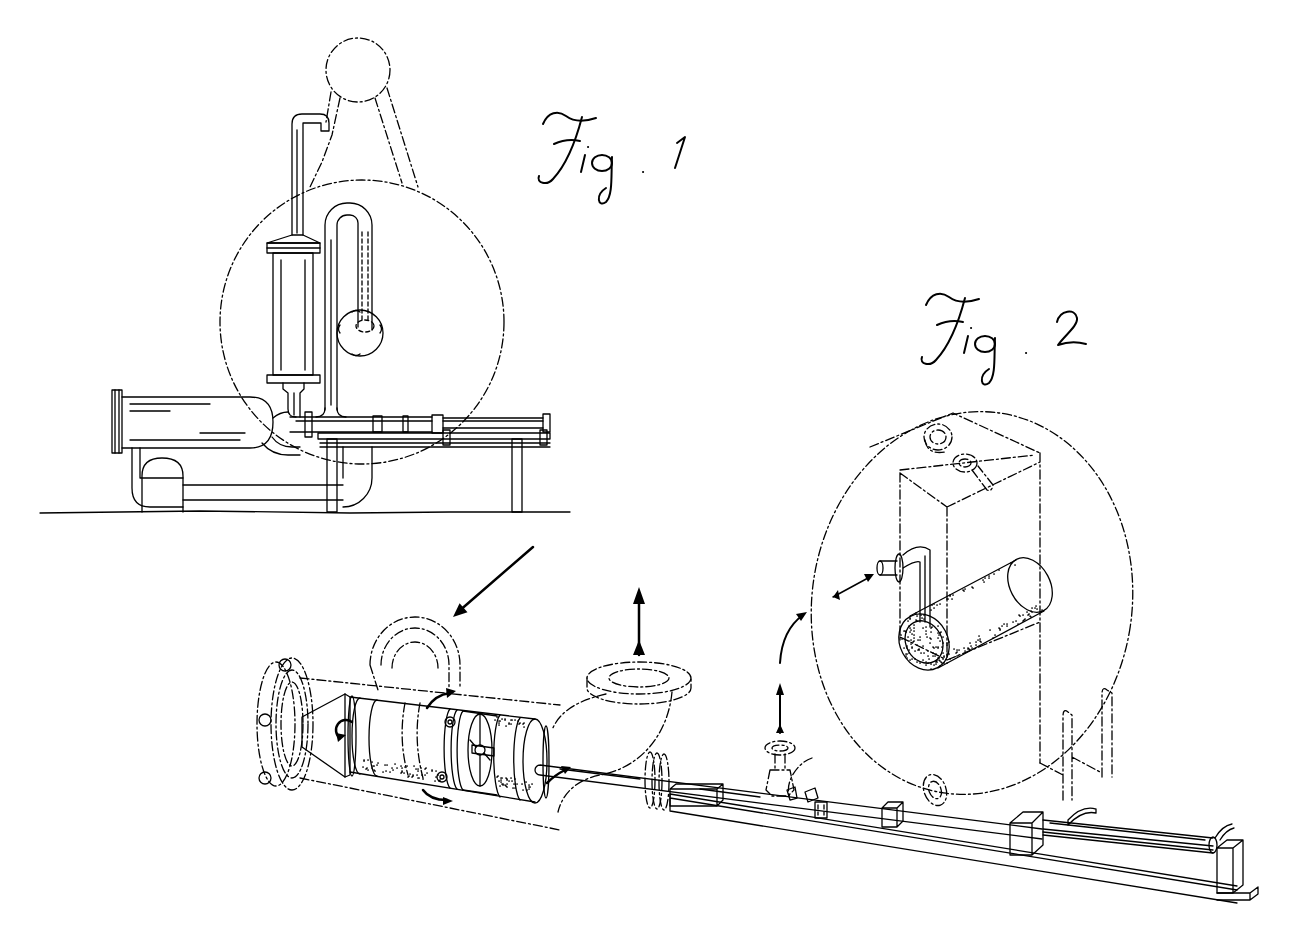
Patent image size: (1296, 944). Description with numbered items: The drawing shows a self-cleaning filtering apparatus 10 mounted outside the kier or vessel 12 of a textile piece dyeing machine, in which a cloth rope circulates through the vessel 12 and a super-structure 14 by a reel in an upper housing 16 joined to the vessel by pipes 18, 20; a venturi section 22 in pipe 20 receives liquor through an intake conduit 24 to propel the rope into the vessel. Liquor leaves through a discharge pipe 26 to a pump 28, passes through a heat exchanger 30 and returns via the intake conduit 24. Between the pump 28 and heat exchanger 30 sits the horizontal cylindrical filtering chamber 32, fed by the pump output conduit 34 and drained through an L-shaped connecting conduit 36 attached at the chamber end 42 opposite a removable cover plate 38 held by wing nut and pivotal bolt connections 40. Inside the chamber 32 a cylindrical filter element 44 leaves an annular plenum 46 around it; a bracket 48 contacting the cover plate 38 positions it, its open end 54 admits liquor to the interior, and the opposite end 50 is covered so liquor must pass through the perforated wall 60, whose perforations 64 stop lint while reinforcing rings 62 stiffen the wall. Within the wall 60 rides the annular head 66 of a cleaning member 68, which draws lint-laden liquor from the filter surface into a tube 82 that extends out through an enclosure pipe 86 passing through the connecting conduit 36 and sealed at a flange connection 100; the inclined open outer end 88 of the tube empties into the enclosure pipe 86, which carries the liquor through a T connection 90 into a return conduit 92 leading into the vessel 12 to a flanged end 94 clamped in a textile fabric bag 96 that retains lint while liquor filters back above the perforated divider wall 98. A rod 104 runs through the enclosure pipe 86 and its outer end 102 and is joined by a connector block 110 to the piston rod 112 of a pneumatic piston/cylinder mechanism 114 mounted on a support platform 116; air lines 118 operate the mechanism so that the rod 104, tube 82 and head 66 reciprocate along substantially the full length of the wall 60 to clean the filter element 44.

In FIG. 1, the self-cleaning filtering apparatus 10 is at (203, 386).
In FIG. 2, the self-cleaning filtering apparatus 10 is at (640, 825).
In FIG. 1, the vessel 12 is at (505, 263).
In FIG. 2, the vessel 12 is at (1132, 590).
In FIG. 1, the super-structure 14 is at (402, 118).
In FIG. 1, the upper housing 16 is at (390, 57).
In FIG. 1, the pipe 18 is at (408, 153).
In FIG. 2, the pipe 18 is at (985, 457).
In FIG. 1, the pipe 20 is at (327, 106).
In FIG. 2, the pipe 20 is at (950, 425).
In FIG. 1, the venturi section 22 is at (335, 140).
In FIG. 1, the intake conduit 24 is at (290, 154).
In FIG. 1, the discharge pipe 26 is at (375, 483).
In FIG. 1, the pump 28 is at (172, 512).
In FIG. 1, the heat exchanger 30 is at (272, 306).
In FIG. 1, the filtering chamber 32 is at (169, 396).
In FIG. 2, the filtering chamber 32 is at (484, 694).
In FIG. 1, the output conduit 34 is at (130, 471).
In FIG. 2, the output conduit 34 is at (470, 652).
In FIG. 1, the connecting conduit 36 is at (272, 398).
In FIG. 2, the connecting conduit 36 is at (676, 700).
In FIG. 1, the cover plate 38 is at (110, 423).
In FIG. 2, the cover plate 38 is at (310, 650).
In FIG. 2, the wing nut and pivotal bolt connections 40 is at (262, 742).
In FIG. 1, the end of the chamber 42 is at (280, 450).
In FIG. 2, the end of the chamber 42 is at (560, 818).
In FIG. 2, the filter element 44 is at (495, 745).
In FIG. 2, the annular plenum 46 is at (475, 812).
In FIG. 2, the bracket 48 is at (330, 690).
In FIG. 2, the opposite end of the filter element 50 is at (530, 806).
In FIG. 2, the end of the filter element 54 is at (343, 772).
In FIG. 2, the wall 60 is at (508, 800).
In FIG. 2, the reinforcing rings 62 is at (374, 780).
In FIG. 2, the perforations 64 is at (402, 700).
In FIG. 2, the annular head 66 is at (455, 795).
In FIG. 2, the cleaning member 68 is at (485, 712).
In FIG. 2, the tube 82 is at (625, 770).
In FIG. 2, the enclosure pipe 86 is at (766, 772).
In FIG. 2, the open outer end 88 is at (712, 808).
In FIG. 1, the T connection 90 is at (338, 416).
In FIG. 2, the T connection 90 is at (806, 760).
In FIG. 1, the return conduit 92 is at (375, 250).
In FIG. 2, the return conduit 92 is at (926, 548).
In FIG. 1, the flanged end 94 is at (380, 320).
In FIG. 1, the textile fabric bag 96 is at (385, 343).
In FIG. 2, the textile fabric bag 96 is at (978, 660).
In FIG. 2, the perforated divider wall 98 is at (950, 690).
In FIG. 1, the flanges 100 is at (322, 442).
In FIG. 2, the flanges 100 is at (668, 760).
In FIG. 2, the outer end 102 is at (820, 792).
In FIG. 1, the rod 104 is at (378, 416).
In FIG. 2, the rod 104 is at (830, 806).
In FIG. 1, the connector block 110 is at (406, 416).
In FIG. 2, the connector block 110 is at (882, 828).
In FIG. 1, the piston rod 112 is at (438, 415).
In FIG. 2, the piston rod 112 is at (1005, 822).
In FIG. 1, the pneumatic piston/cylinder mechanism 114 is at (512, 418).
In FIG. 2, the pneumatic piston/cylinder mechanism 114 is at (1140, 832).
In FIG. 1, the rail 116 is at (488, 441).
In FIG. 2, the rail 116 is at (956, 858).
In FIG. 2, the air lines 118 is at (1097, 812).